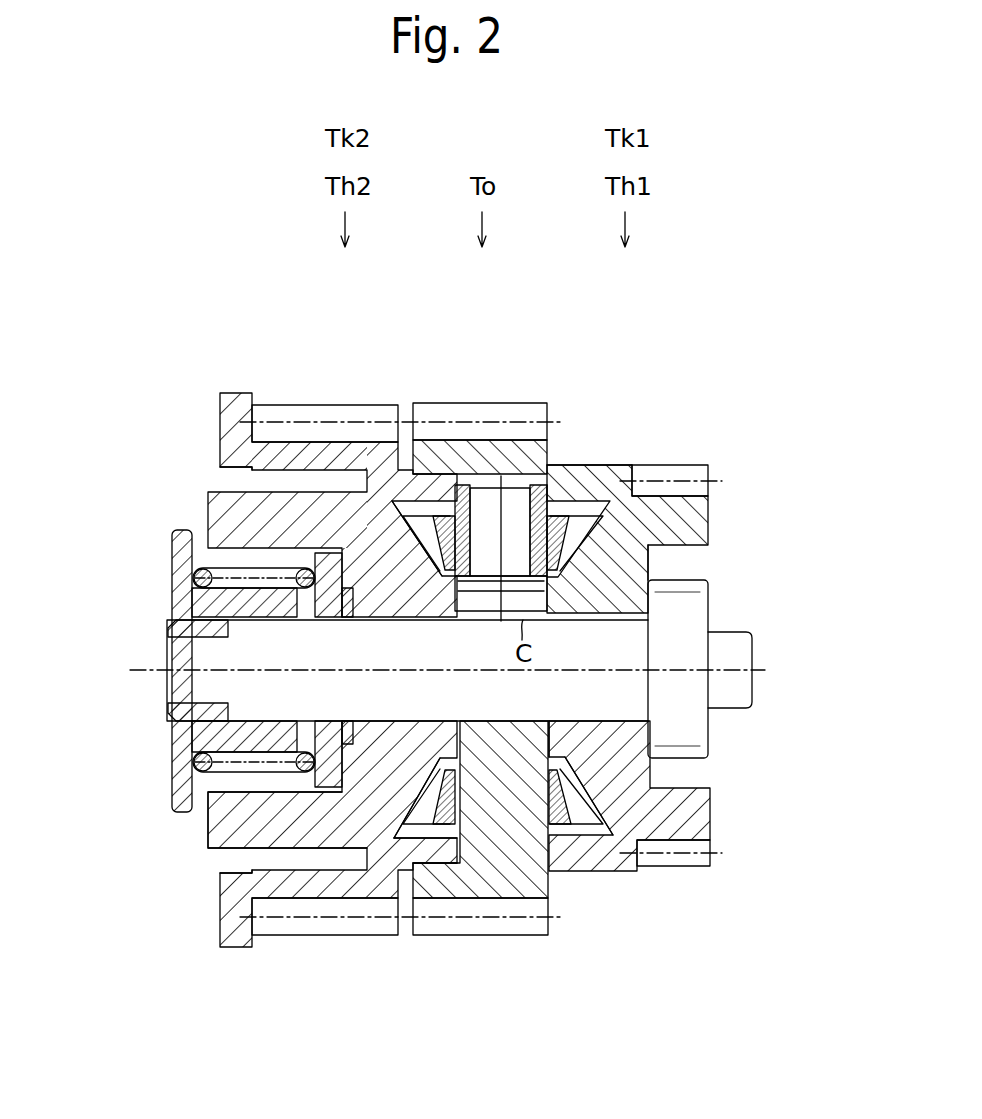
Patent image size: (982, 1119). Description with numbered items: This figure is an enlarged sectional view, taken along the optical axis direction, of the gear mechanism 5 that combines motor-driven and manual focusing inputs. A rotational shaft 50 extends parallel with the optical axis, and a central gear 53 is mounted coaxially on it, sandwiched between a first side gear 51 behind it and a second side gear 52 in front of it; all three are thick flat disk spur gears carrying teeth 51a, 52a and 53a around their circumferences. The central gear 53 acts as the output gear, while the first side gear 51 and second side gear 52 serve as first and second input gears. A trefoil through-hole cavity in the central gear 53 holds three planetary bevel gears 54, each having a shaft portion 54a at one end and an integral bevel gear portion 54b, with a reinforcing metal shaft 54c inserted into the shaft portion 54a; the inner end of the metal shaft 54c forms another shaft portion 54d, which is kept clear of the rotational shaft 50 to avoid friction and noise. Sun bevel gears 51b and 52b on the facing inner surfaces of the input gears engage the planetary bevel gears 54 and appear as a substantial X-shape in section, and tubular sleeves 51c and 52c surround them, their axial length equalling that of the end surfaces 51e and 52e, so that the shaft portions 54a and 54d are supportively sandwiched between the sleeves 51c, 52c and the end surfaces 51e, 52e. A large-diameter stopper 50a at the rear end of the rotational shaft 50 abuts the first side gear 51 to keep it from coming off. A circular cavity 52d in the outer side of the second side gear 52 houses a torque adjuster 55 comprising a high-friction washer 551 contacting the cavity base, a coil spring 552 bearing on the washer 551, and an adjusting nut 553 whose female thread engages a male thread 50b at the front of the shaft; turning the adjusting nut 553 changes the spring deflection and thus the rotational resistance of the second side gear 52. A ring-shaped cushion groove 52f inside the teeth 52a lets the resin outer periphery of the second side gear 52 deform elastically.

The gear mechanism 5 is at (632, 361).
The rotational shaft 50 is at (730, 706).
The stopper 50a is at (682, 634).
The male thread 50b is at (205, 630).
The first side gear 51 is at (610, 466).
The teeth 51a is at (686, 482).
The sun bevel gear 51b is at (585, 832).
The sleeve 51c is at (568, 860).
The end surface 51e is at (548, 745).
The second side gear 52 is at (238, 393).
The teeth 52a is at (322, 418).
The sun bevel gear 52b is at (398, 832).
The sleeve 52c is at (443, 858).
The cavity 52d is at (230, 797).
The end surface 52e is at (460, 745).
The cushion groove 52f is at (250, 468).
The central gear 53 is at (440, 403).
The teeth 53a is at (440, 430).
The planetary bevel gear 54 is at (516, 495).
The shaft portion 54a is at (542, 490).
The bevel gear portion 54b is at (574, 520).
The metal shaft 54c is at (490, 520).
The shaft portion 54d is at (650, 562).
The torque adjuster 55 is at (160, 777).
The washer 551 is at (300, 740).
The coil spring 552 is at (205, 575).
The adjusting nut 553 is at (192, 597).